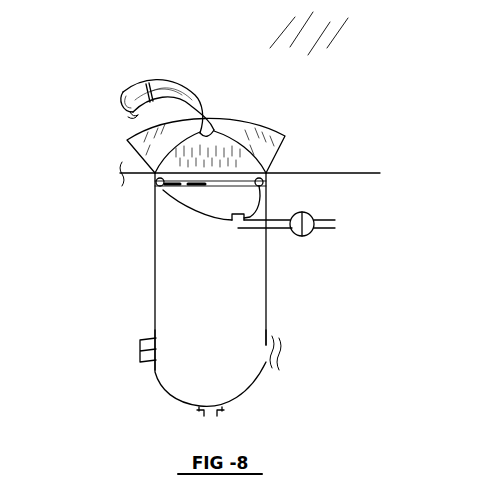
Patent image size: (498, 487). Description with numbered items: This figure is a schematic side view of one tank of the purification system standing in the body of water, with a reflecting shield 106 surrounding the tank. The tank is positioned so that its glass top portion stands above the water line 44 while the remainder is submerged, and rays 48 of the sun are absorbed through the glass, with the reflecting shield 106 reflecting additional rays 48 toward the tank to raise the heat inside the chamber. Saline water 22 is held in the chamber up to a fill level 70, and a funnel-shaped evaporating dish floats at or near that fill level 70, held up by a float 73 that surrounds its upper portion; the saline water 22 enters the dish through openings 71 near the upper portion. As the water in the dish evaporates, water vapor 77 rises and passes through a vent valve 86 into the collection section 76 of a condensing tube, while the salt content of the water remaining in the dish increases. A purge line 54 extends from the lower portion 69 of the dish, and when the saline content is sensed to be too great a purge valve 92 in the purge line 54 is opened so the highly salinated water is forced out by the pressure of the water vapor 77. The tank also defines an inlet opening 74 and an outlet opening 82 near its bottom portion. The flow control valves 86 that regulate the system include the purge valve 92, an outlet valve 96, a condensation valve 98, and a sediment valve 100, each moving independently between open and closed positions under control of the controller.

The saline water 22 is at (298, 285).
The water line 44 is at (248, 174).
The rays 48 is at (322, 33).
The purge line 54 is at (255, 229).
The lower portion 69 is at (232, 215).
The fill level 70 is at (307, 173).
The openings 71 is at (173, 188).
The float 73 is at (264, 182).
The inlet opening 74 is at (259, 356).
The collection section 76 is at (147, 86).
The water vapor 77 is at (213, 126).
The outlet opening 82 is at (163, 343).
The flow control valve 86 is at (128, 118).
The purge valve 92 is at (310, 232).
The outlet valve 96 is at (140, 347).
The condensation valve 98 is at (128, 100).
The sediment valve 100 is at (216, 407).
The reflecting shield 106 is at (258, 139).